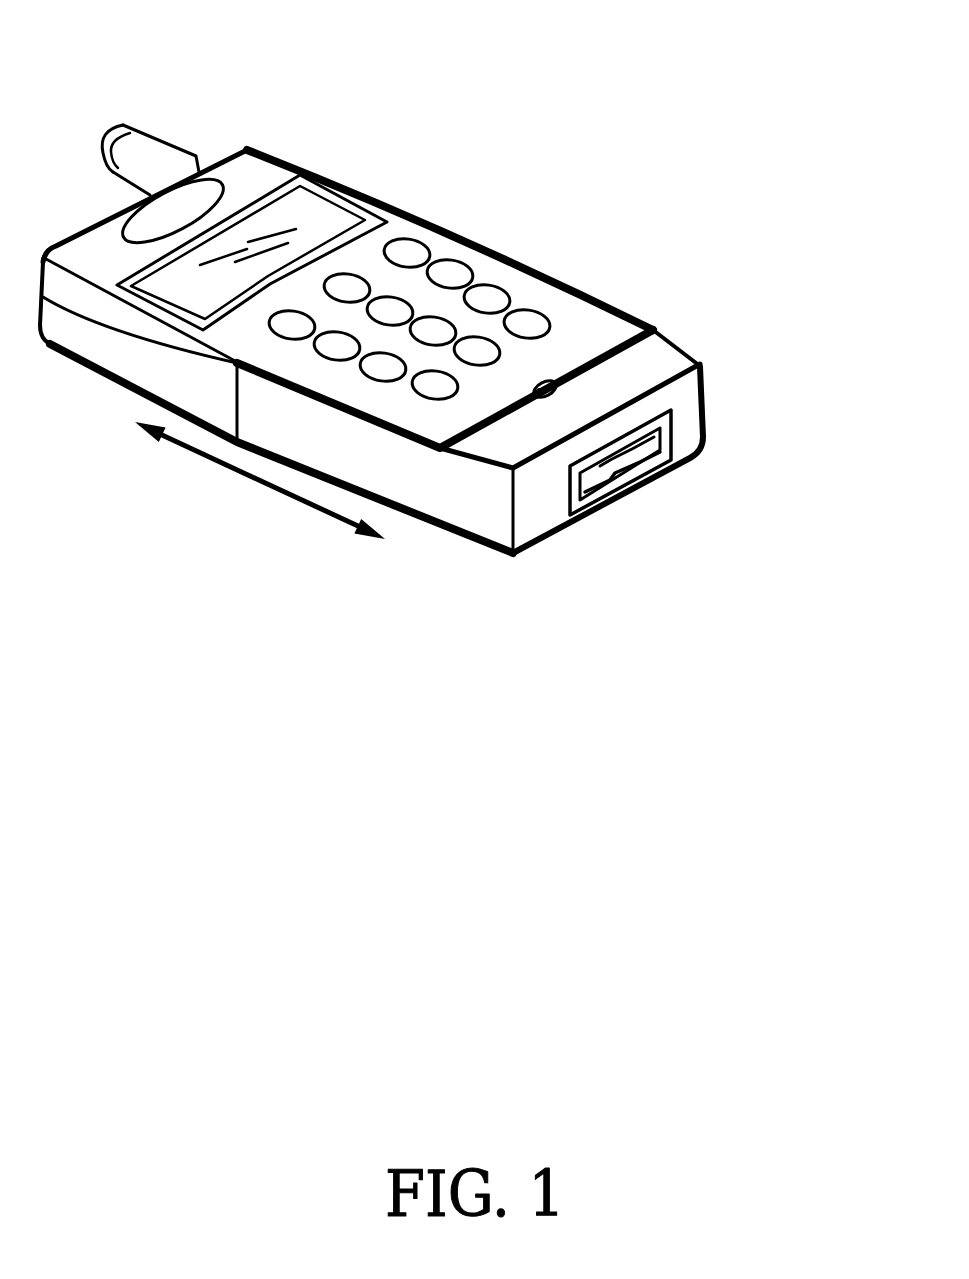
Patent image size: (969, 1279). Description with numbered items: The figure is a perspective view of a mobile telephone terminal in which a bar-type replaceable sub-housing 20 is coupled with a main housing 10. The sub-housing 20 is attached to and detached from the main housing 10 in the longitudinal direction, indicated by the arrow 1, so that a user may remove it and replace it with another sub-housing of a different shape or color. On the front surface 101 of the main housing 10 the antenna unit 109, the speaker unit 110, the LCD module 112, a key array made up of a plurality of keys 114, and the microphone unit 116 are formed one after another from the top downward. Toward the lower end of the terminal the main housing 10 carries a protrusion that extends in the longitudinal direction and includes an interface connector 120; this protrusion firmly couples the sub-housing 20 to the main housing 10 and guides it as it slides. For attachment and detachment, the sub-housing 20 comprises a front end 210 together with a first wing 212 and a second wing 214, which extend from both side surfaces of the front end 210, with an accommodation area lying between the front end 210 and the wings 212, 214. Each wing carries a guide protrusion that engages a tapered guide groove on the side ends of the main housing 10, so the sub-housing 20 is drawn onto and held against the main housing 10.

The arrow 1 is at (230, 470).
The main housing 10 is at (493, 236).
The bar-type replaceable sub-housing 20 is at (527, 578).
The front surface 101 is at (262, 165).
The antenna unit 109 is at (135, 150).
The speaker unit 110 is at (170, 212).
The LCD module 112 is at (296, 212).
The keys 114 is at (408, 252).
The microphone unit 116 is at (538, 380).
The interface connector 120 is at (680, 469).
The front end 210 is at (630, 386).
The first wing 212 is at (318, 445).
The second wing 214 is at (530, 277).